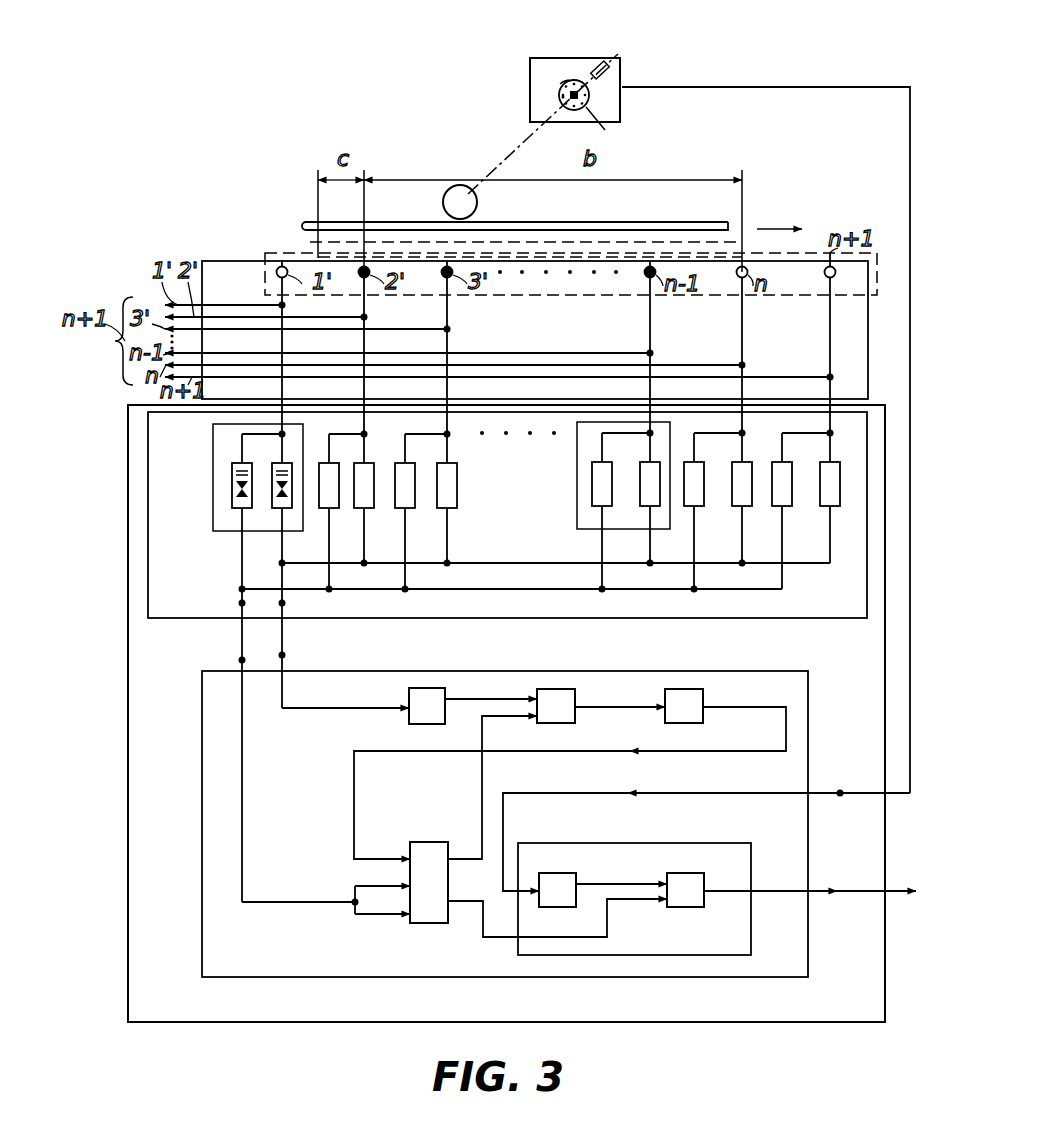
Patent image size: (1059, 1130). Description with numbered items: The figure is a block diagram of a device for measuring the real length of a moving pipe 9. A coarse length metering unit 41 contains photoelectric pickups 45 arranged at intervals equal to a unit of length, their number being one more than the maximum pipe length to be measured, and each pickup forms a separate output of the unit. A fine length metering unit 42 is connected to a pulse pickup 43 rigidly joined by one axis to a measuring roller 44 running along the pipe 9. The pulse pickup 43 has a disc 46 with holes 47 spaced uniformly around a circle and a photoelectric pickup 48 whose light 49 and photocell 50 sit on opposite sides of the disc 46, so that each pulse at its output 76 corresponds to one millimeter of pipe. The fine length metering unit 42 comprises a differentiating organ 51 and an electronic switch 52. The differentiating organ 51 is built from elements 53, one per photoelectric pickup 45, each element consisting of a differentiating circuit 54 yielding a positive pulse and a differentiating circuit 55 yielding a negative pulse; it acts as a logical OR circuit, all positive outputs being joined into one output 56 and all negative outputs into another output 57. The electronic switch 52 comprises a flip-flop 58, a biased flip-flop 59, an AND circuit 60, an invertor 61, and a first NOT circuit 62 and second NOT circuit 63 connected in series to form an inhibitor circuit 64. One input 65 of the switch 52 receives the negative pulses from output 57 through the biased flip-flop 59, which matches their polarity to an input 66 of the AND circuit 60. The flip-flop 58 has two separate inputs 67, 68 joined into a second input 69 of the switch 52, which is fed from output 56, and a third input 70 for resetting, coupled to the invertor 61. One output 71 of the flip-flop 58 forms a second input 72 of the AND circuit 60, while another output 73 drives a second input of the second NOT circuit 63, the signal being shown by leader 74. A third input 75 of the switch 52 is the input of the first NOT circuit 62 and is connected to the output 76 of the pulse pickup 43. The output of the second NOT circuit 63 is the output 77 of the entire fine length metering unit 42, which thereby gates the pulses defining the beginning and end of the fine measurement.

The pipe 9 is at (302, 226).
The coarse length metering unit 41 is at (225, 261).
The fine length metering unit 42 is at (128, 467).
The pulse pickup 43 is at (567, 58).
The measuring roller 44 is at (460, 185).
The photoelectric pickups 45 is at (270, 253).
The disc 46 is at (560, 84).
The holes 47 is at (560, 97).
The photoelectric pickup 48 is at (612, 74).
The light 49 is at (586, 107).
The photocell 50 is at (598, 92).
The differentiating organ 51 is at (175, 618).
The electronic switch 52 is at (202, 877).
The elements 53 is at (213, 437).
The differentiating circuit 54 is at (232, 490).
The differentiating circuit 55 is at (276, 510).
The output 56 is at (242, 603).
The output 57 is at (282, 605).
The flip-flop 58 is at (429, 882).
The biased flip-flop 59 is at (427, 706).
The AND circuit 60 is at (556, 706).
The invertor 61 is at (639, 706).
The first NOT circuit 62 is at (557, 890).
The second NOT circuit 63 is at (640, 890).
The inhibitor circuit 64 is at (655, 843).
The input 65 is at (284, 660).
The input 66 is at (527, 690).
The input 67 is at (395, 884).
The input 68 is at (398, 918).
The second input 69 is at (242, 660).
The third input 70 is at (404, 859).
The output 71 is at (492, 787).
The second input 72 is at (531, 722).
The output 73 is at (557, 904).
The input line 74 is at (658, 904).
The third input 75 is at (840, 793).
The output 76 is at (665, 87).
The output 77 is at (840, 893).